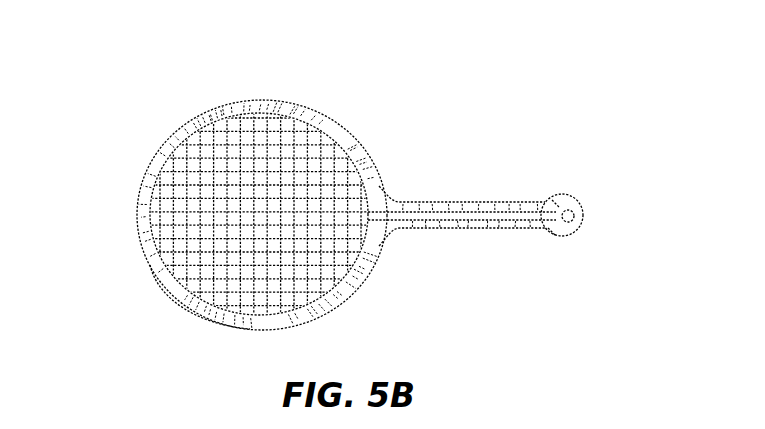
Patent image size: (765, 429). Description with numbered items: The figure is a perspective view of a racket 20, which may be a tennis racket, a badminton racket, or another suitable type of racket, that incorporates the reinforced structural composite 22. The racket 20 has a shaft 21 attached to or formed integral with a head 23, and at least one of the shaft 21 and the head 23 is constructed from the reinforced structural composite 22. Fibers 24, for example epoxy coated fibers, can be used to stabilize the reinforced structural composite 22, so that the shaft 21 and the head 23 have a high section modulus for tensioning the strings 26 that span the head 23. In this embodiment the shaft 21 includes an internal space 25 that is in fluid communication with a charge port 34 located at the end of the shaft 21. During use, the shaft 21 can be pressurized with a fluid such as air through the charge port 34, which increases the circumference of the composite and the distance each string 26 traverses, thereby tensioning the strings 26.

The racket 20 is at (349, 203).
The shaft 21 is at (567, 250).
The reinforced structural composite 22 is at (310, 112).
The head 23 is at (149, 290).
The fibers 24 is at (214, 324).
The internal space 25 is at (461, 216).
The strings 26 is at (328, 256).
The charge port 34 is at (576, 202).